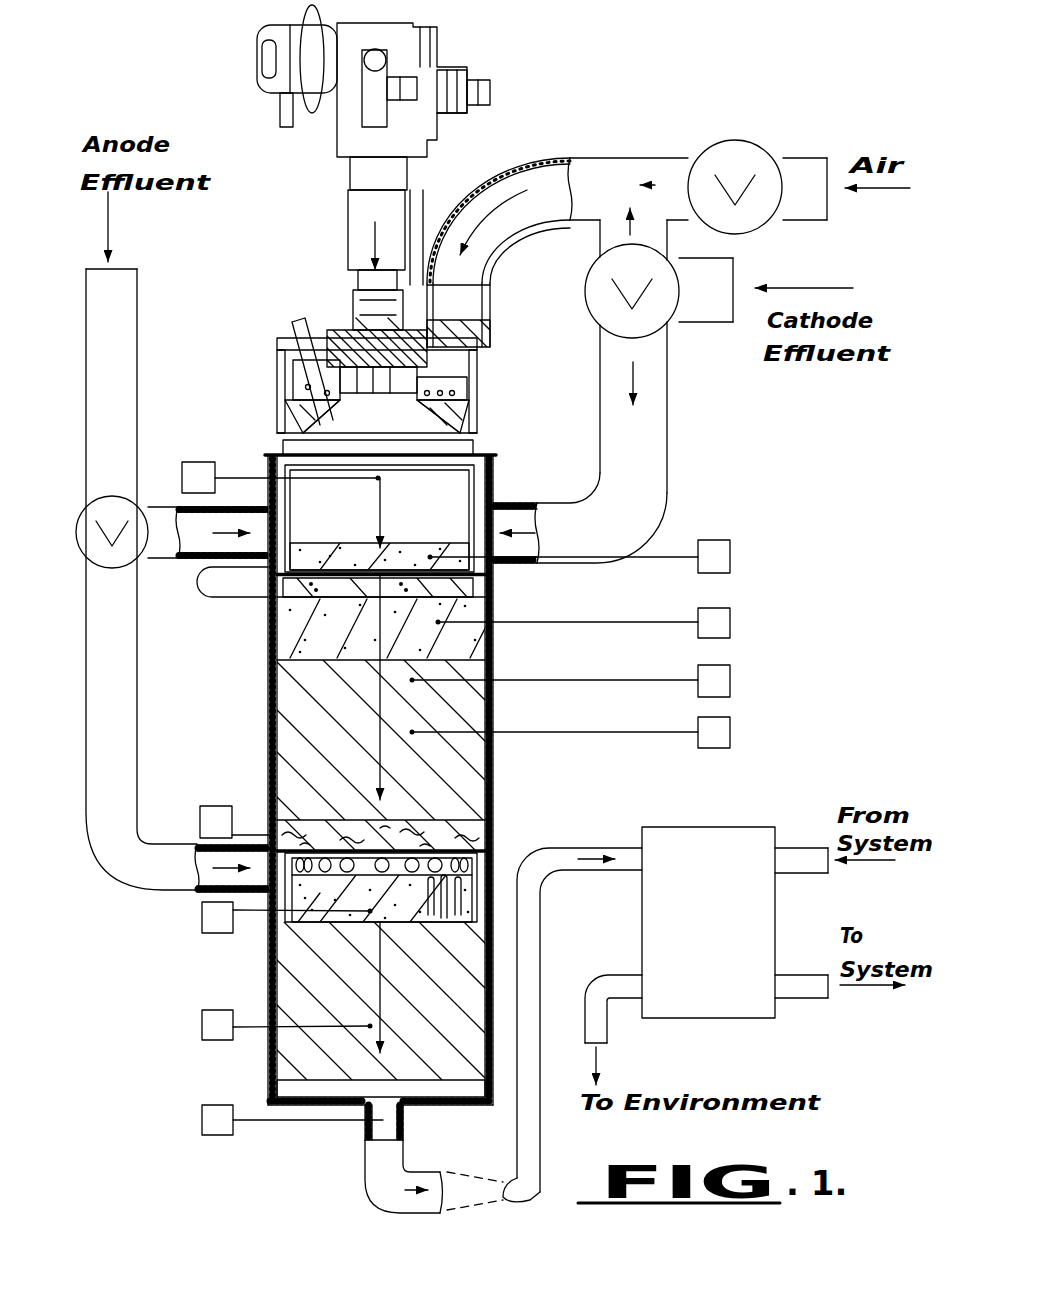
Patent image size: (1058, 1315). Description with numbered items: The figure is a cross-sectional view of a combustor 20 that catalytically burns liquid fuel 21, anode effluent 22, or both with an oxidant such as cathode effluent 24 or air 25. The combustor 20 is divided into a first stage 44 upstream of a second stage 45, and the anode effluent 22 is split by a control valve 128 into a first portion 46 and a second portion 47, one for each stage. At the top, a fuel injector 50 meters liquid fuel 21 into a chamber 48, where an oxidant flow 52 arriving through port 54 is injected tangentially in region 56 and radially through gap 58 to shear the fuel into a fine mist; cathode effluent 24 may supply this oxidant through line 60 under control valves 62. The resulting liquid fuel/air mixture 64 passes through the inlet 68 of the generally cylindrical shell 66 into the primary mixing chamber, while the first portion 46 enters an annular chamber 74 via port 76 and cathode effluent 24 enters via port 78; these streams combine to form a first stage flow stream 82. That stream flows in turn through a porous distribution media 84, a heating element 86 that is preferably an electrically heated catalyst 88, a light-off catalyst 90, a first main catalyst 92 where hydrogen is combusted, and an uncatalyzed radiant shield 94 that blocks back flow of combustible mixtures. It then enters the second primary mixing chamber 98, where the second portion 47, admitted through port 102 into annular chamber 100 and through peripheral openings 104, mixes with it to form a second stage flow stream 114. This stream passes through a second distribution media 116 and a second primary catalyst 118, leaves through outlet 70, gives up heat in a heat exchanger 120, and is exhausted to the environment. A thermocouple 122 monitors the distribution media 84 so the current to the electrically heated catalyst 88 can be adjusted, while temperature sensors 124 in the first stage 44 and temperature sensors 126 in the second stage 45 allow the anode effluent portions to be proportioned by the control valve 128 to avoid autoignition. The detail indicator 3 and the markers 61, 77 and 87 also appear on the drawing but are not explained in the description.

The reactor section detail 3 is at (490, 442).
The combustor 20 is at (568, 75).
The liquid fuel 21 is at (370, 240).
The anode effluent 22 is at (108, 218).
The cathode effluent 24 is at (808, 287).
The air 25 is at (875, 192).
The first stage 44 is at (505, 648).
The second stage 45 is at (232, 984).
The first portion 46 is at (184, 557).
The second portion 47 is at (197, 863).
The chamber 48 is at (285, 410).
The fuel injector 50 is at (340, 305).
The oxidant flow 52 is at (489, 207).
The port 54 is at (463, 347).
The region 56 is at (425, 380).
The gap 58 is at (467, 407).
The line 60 is at (603, 237).
The air valve 61 is at (735, 140).
The control valves 62 is at (590, 275).
The liquid fuel/air mixture 64 is at (273, 425).
The shell 66 is at (497, 780).
The inlet 68 is at (266, 436).
The outlet 70 is at (370, 1122).
The annular chamber 74 is at (290, 496).
The port 76 is at (240, 590).
The chamber top corner 77 is at (497, 490).
The port 78 is at (517, 500).
The first stage flow stream 82 is at (380, 697).
The distribution media 84 is at (347, 567).
The heating element 86 is at (298, 592).
The flow arrow 87 is at (385, 525).
The electrically heated catalyst 88 is at (440, 600).
The light-off catalyst 90 is at (460, 660).
The first main catalyst 92 is at (493, 760).
The radiant shield 94 is at (505, 820).
The second primary mixing chamber 98 is at (385, 1001).
The annular chamber 100 is at (507, 852).
The port 102 is at (290, 832).
The openings 104 is at (415, 912).
The second stage flow stream 114 is at (385, 975).
The second distribution media 116 is at (500, 895).
The second primary catalyst 118 is at (500, 953).
The heat exchanger 120 is at (682, 835).
The thermocouple 122 is at (717, 540).
The temperature sensors 124 is at (730, 630).
The temperature sensors 126 is at (215, 933).
The control valve 128 is at (112, 568).